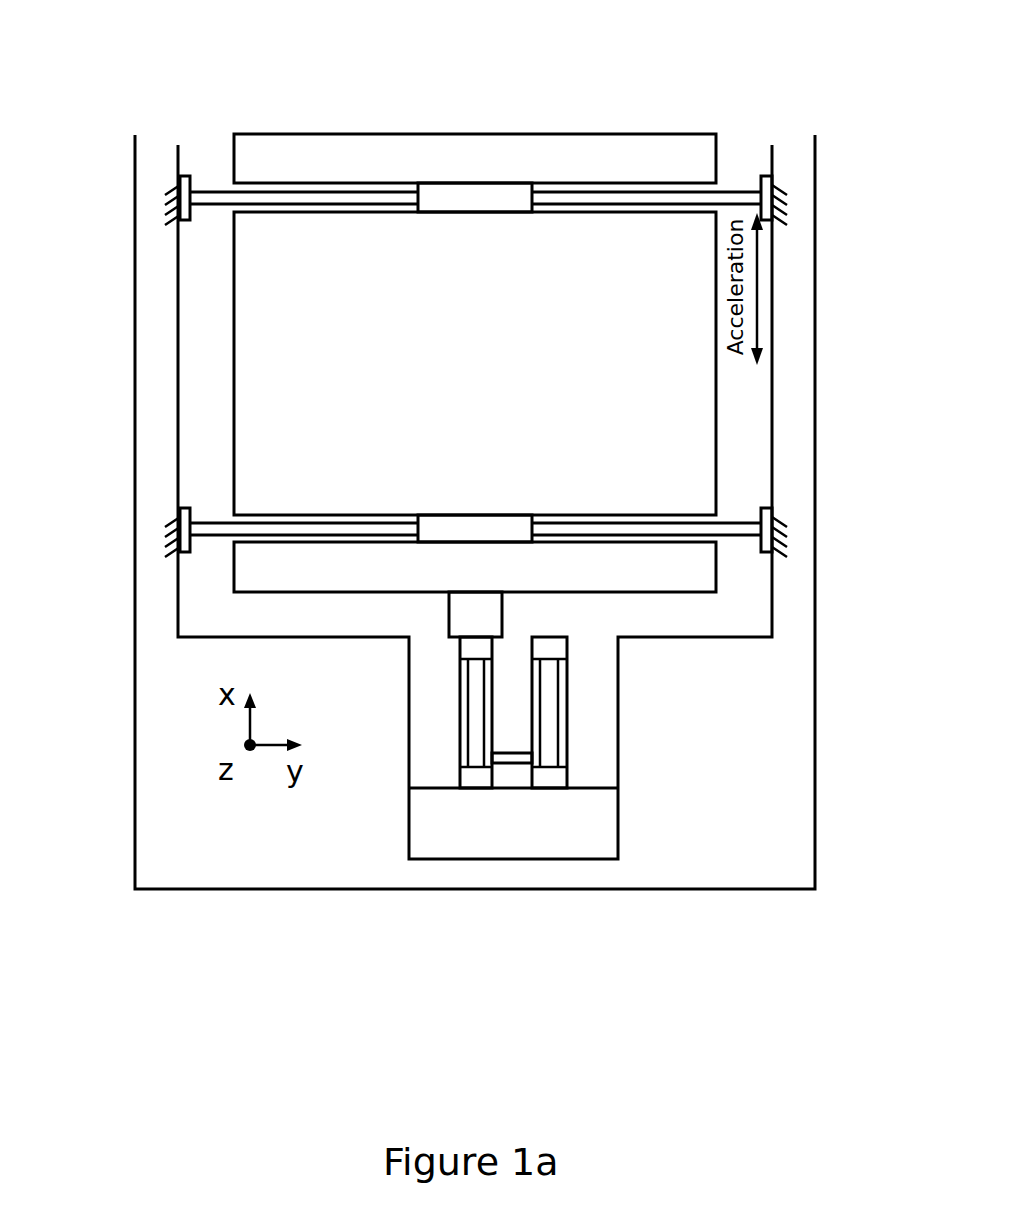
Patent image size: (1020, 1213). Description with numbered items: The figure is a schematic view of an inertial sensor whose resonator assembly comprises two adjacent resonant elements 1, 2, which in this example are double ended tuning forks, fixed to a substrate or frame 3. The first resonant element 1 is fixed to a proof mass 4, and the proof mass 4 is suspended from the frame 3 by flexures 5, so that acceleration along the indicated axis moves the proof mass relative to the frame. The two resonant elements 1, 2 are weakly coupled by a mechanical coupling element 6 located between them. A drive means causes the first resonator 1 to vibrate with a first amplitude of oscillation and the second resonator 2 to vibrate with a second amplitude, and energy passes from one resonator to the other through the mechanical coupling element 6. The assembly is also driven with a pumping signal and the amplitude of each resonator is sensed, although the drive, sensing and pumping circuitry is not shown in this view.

The first resonant element 1 is at (458, 712).
The second resonant element 2 is at (567, 712).
The frame 3 is at (157, 404).
The proof mass 4 is at (490, 248).
The flexures 5 is at (210, 196).
The mechanical coupling element 6 is at (513, 758).